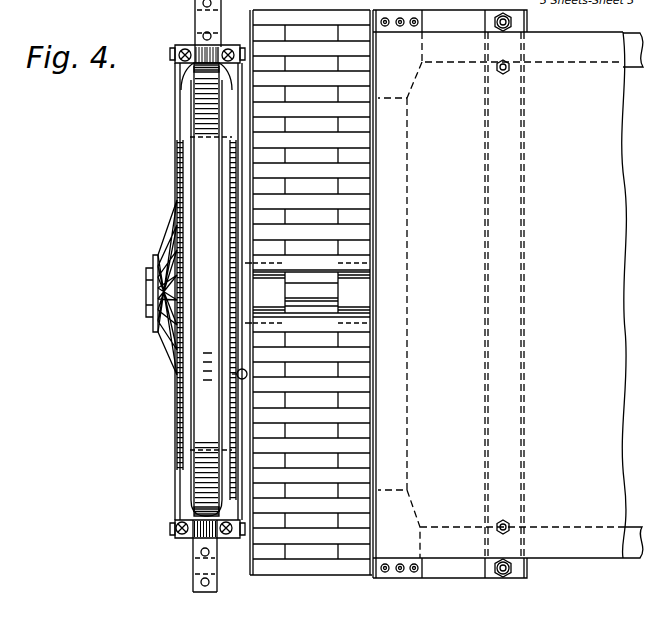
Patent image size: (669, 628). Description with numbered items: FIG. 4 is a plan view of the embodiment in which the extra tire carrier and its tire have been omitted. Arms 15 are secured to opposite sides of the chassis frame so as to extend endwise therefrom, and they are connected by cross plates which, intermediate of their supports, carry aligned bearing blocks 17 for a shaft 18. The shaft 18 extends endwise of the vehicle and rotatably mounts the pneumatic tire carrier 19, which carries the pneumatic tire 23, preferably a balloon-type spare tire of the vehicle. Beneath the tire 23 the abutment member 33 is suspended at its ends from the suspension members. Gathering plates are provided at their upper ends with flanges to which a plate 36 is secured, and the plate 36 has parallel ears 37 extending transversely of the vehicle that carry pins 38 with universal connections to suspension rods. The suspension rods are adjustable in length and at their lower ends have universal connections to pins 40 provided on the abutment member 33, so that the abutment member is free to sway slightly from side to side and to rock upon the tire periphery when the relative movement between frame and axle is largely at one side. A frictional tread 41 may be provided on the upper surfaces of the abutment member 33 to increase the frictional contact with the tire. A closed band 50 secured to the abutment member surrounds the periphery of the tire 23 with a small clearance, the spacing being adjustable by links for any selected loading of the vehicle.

The arm 15 is at (451, 572).
The bearing block 17 is at (382, 293).
The shaft 18 is at (315, 300).
The pneumatic tire carrier 19 is at (165, 243).
The pneumatic tire 23 is at (195, 480).
The abutment member 33 is at (175, 468).
The plate 36 is at (192, 550).
The ear 37 is at (190, 517).
The pin 38 is at (223, 540).
The pin 40 is at (172, 532).
The frictional tread 41 is at (158, 430).
The closed band 50 is at (203, 118).